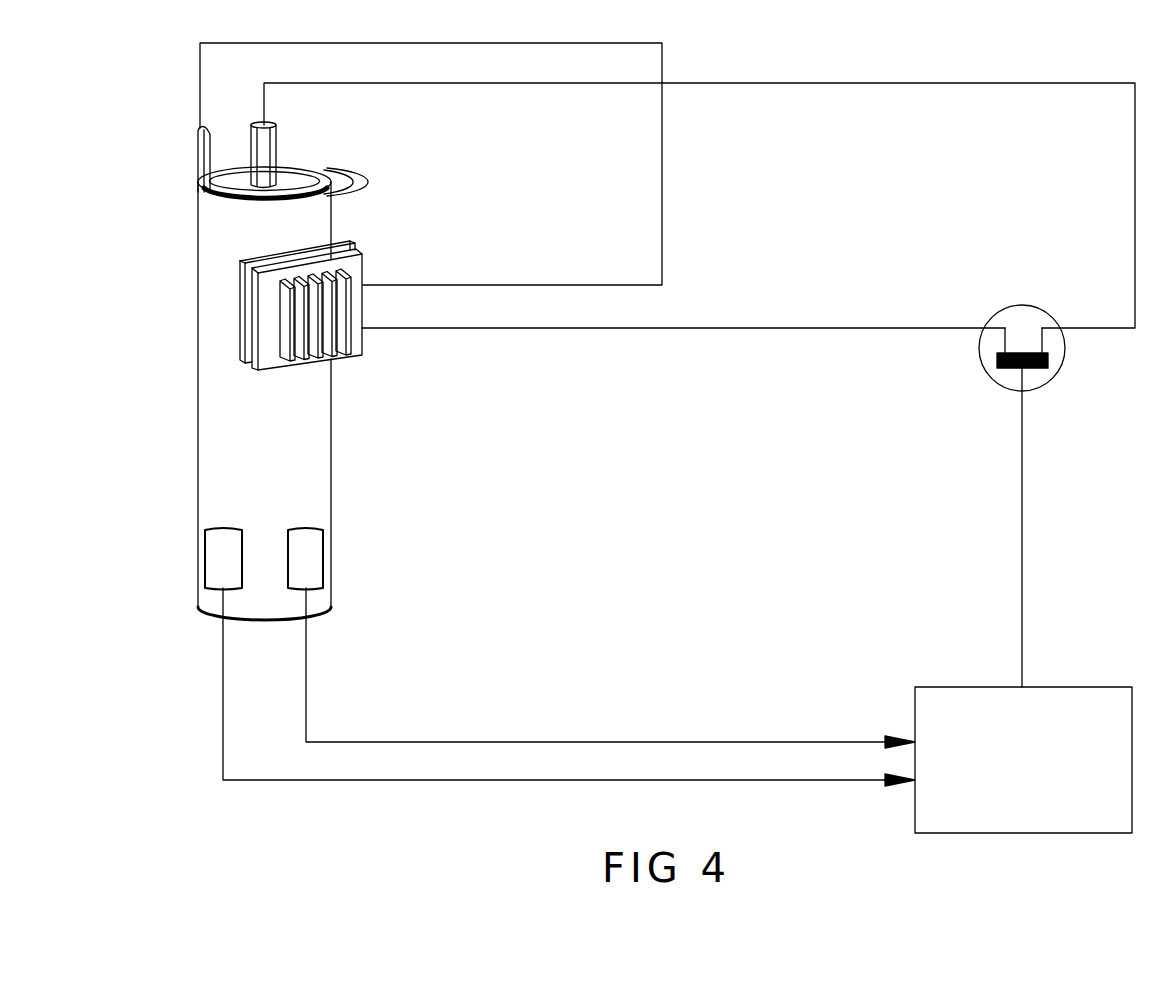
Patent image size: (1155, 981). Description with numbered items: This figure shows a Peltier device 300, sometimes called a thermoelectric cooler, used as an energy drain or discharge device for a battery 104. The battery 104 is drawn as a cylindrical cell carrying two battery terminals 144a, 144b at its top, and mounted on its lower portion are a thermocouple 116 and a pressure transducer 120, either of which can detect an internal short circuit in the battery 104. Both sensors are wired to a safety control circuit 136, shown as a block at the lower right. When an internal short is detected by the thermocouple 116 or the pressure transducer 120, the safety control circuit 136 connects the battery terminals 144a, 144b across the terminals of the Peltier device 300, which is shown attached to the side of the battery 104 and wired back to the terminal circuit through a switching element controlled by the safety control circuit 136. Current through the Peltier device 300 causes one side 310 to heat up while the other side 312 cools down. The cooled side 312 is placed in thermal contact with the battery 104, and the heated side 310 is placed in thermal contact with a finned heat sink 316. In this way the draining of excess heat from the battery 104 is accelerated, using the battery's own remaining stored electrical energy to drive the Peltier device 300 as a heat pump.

The battery 104 is at (198, 394).
The thermocouple 116 is at (323, 558).
The pressure transducer 120 is at (205, 558).
The safety control circuit 136 is at (1023, 777).
The battery terminal 144a is at (197, 158).
The battery terminal 144b is at (276, 155).
The Peltier device 300 is at (396, 267).
The heated side 310 is at (365, 243).
The cooled side 312 is at (355, 232).
The heat sink 316 is at (366, 272).